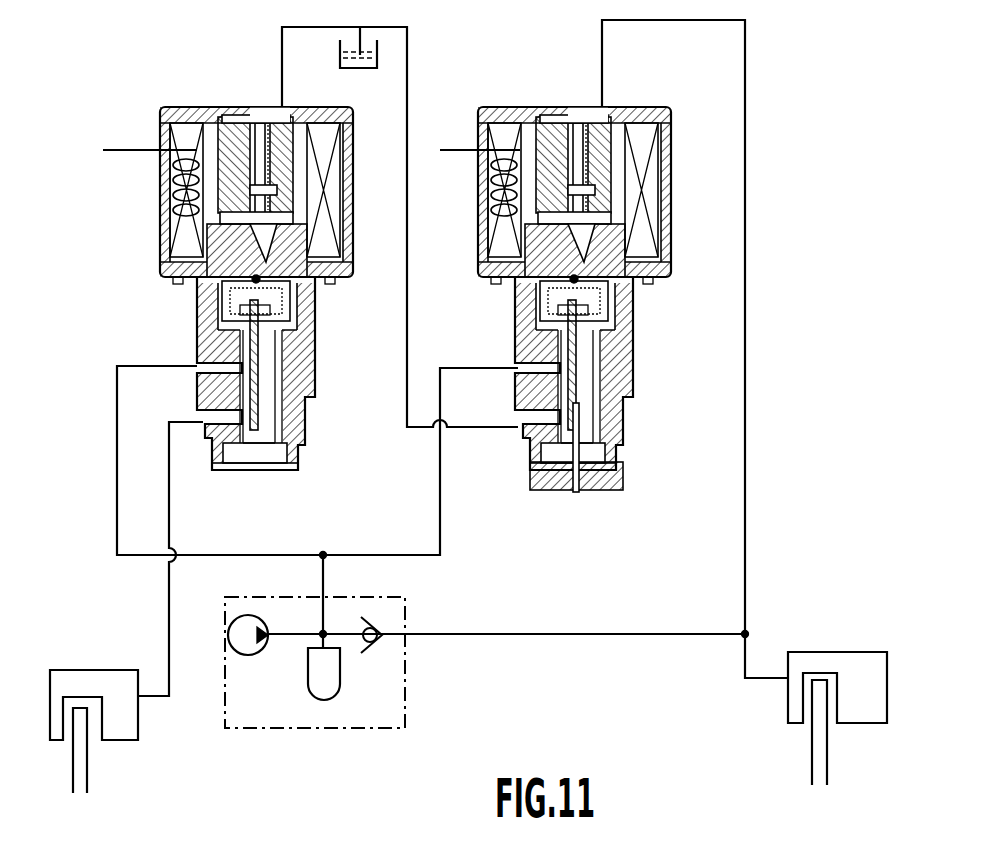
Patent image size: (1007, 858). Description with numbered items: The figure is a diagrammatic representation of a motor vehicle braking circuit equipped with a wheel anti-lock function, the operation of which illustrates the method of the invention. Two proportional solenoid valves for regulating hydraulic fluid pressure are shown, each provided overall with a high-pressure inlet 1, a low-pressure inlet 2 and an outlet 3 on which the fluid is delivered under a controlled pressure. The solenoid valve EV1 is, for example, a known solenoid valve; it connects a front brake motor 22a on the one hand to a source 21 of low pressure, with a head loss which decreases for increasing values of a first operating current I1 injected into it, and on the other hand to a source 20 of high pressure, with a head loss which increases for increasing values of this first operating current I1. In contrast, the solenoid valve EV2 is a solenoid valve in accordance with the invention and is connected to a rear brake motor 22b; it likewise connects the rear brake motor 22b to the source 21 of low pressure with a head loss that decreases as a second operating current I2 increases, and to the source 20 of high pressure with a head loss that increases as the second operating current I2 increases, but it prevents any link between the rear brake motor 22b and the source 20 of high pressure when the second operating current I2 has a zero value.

The high-pressure inlet 1 is at (197, 365).
The low-pressure inlet 2 is at (278, 117).
The outlet 3 is at (604, 117).
The source of high pressure 20 is at (378, 702).
The source of low pressure 21 is at (378, 55).
The front brake motor 22a is at (125, 722).
The rear brake motor 22b is at (795, 702).
The solenoid valve EV1 is at (211, 98).
The solenoid valve EV2 is at (553, 95).
The first operating current I1 is at (148, 125).
The second operating current I2 is at (477, 126).